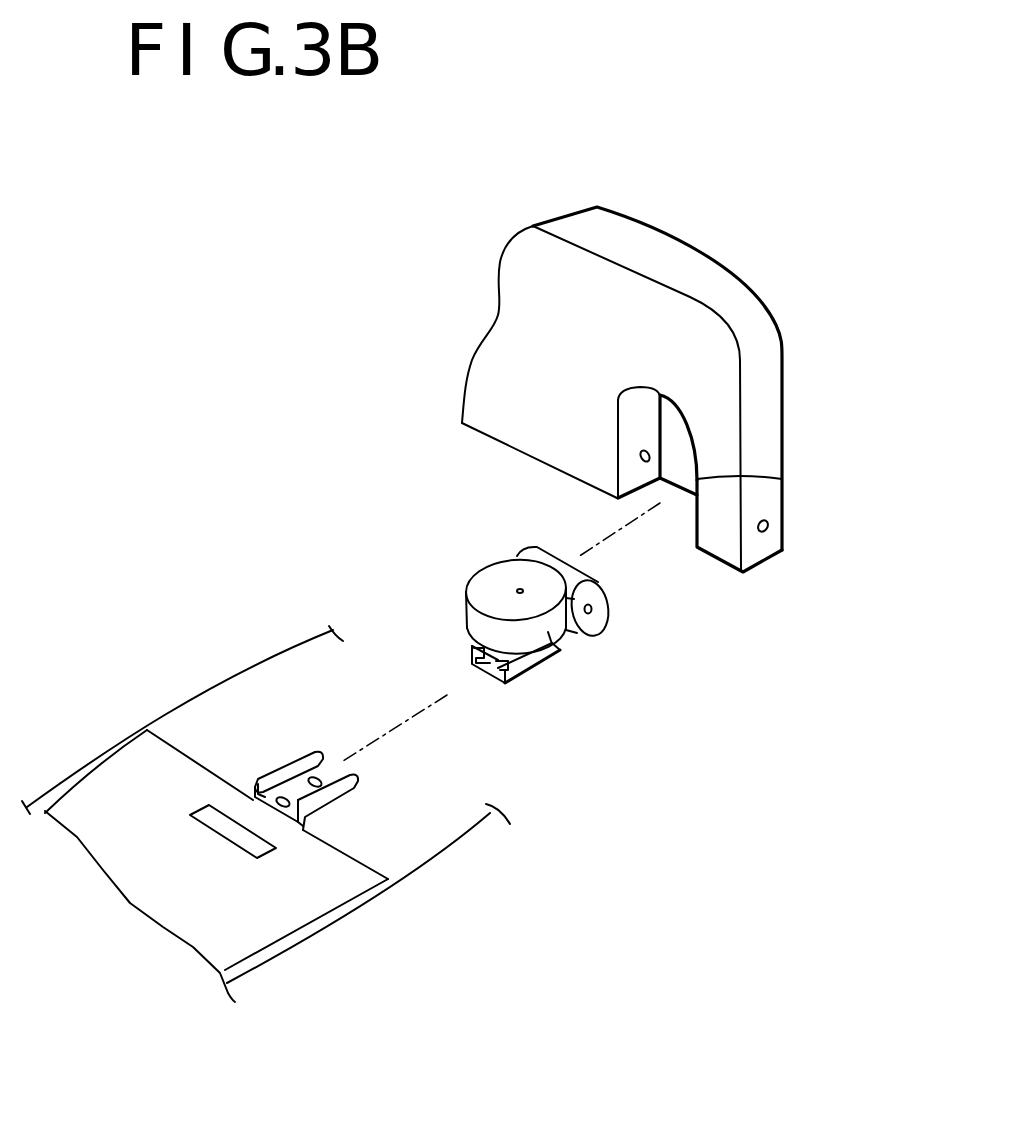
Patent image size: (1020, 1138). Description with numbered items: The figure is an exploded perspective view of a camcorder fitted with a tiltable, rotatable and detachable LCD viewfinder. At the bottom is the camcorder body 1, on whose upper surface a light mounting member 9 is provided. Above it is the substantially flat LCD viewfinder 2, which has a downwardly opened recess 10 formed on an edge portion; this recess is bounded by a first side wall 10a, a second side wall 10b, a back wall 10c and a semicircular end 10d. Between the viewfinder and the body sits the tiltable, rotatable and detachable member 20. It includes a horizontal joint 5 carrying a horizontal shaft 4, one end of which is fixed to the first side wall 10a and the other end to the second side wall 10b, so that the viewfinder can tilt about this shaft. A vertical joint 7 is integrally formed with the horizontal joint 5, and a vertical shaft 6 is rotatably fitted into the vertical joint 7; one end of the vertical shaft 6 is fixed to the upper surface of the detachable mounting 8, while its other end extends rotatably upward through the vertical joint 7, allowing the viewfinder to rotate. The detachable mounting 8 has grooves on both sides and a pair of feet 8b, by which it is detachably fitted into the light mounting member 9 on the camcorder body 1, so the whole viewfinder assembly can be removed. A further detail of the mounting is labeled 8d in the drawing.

The camcorder body 1 is at (307, 905).
The LCD viewfinder 2 is at (688, 428).
The horizontal shaft 4 is at (602, 612).
The horizontal joint 5 is at (587, 638).
The vertical shaft 6 is at (518, 592).
The vertical joint 7 is at (550, 635).
The detachable mounting 8 is at (476, 725).
The feet 8b is at (520, 673).
The bracket tab 8d is at (475, 650).
The light mounting member 9 is at (356, 781).
The recess 10 is at (670, 488).
The first side wall 10a is at (633, 442).
The second side wall 10b is at (770, 477).
The back wall 10c is at (679, 435).
The semicircular end 10d is at (655, 393).
The tiltable, rotatable and detachable member 20 is at (435, 653).